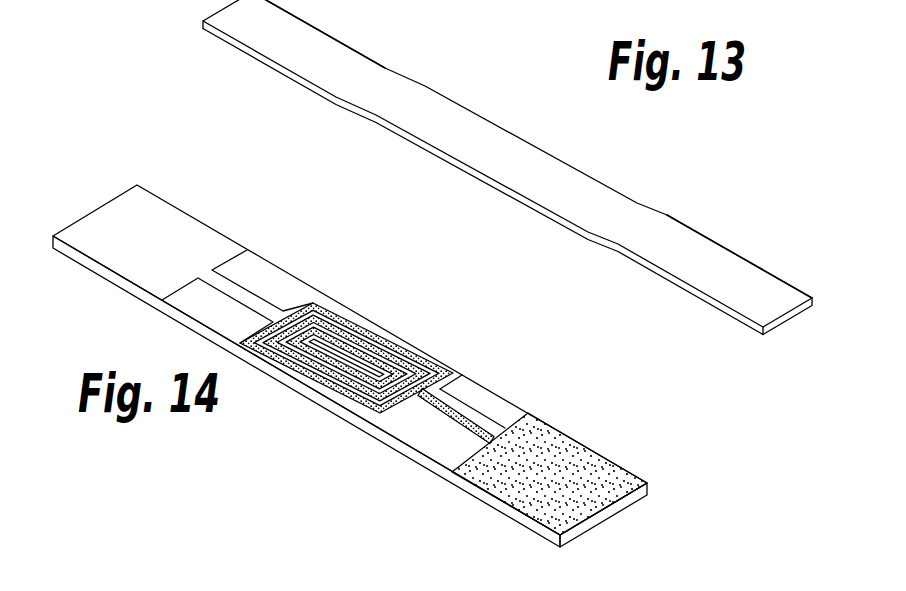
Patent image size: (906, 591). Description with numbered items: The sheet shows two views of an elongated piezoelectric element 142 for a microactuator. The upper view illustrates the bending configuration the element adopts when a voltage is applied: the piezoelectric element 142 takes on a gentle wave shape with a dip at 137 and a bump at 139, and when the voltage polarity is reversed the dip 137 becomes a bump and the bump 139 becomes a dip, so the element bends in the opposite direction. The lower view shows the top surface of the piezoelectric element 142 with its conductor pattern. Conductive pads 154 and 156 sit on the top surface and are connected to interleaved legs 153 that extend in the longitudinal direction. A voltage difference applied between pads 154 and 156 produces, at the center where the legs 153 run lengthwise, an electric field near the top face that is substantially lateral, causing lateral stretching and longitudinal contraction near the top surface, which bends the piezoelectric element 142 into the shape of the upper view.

In FIG. 13, the dip 137 is at (370, 80).
In FIG. 13, the bump 139 is at (677, 233).
In FIG. 13, the piezoelectric element 142 is at (510, 150).
In FIG. 14, the piezoelectric element 142 is at (327, 406).
In FIG. 14, the interleaved legs 153 is at (402, 335).
In FIG. 14, the conductive pad 154 is at (153, 220).
In FIG. 14, the conductive pad 156 is at (600, 472).